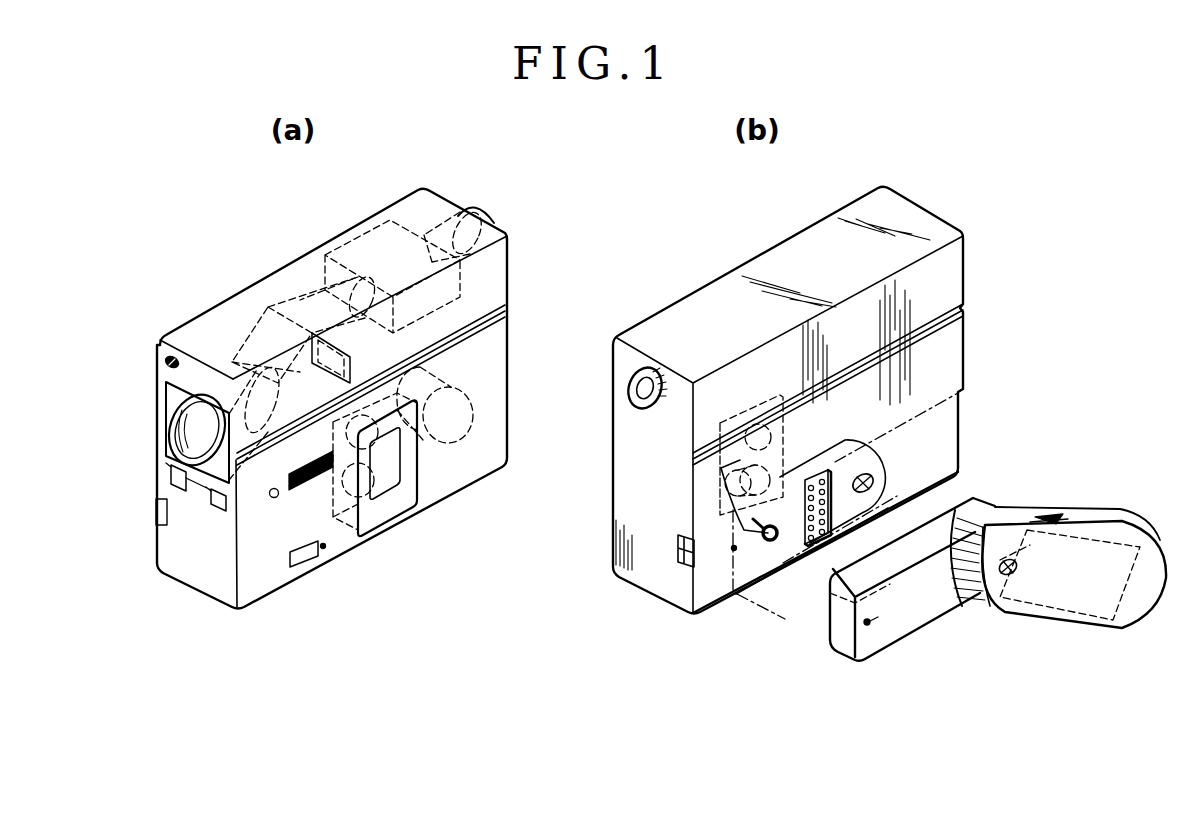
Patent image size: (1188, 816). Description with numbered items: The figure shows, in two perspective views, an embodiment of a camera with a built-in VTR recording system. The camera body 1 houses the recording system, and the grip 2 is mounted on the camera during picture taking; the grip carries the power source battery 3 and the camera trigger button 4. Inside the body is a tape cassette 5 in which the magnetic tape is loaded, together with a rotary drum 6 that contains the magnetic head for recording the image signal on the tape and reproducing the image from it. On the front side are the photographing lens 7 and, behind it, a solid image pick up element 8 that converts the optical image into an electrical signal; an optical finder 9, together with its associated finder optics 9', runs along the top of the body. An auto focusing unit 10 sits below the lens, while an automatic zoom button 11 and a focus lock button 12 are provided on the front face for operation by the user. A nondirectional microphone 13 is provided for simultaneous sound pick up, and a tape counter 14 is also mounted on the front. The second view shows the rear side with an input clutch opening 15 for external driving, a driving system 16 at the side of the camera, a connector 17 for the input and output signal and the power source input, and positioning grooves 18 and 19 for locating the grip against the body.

The camera body 1 is at (313, 258).
The grip 2 is at (912, 617).
The power source battery 3 is at (1062, 600).
The camera trigger button 4 is at (1045, 514).
The tape cassette 5 is at (345, 492).
The rotary drum 6 is at (459, 411).
The photographing lens 7 is at (176, 432).
The solid image pick up element 8 is at (322, 340).
The optical finder 9 is at (459, 201).
The viewfinder optical system 9' is at (306, 303).
The auto focusing unit 10 is at (210, 496).
The automatic zoom button 11 is at (322, 477).
The focus lock button 12 is at (272, 498).
The nondirectional microphone 13 is at (165, 358).
The tape counter 14 is at (303, 568).
The input clutch opening 15 is at (769, 542).
The driving system 16 is at (738, 542).
The connector 17 is at (826, 536).
The positioning groove 18 is at (873, 482).
The positioning groove 19 is at (371, 385).